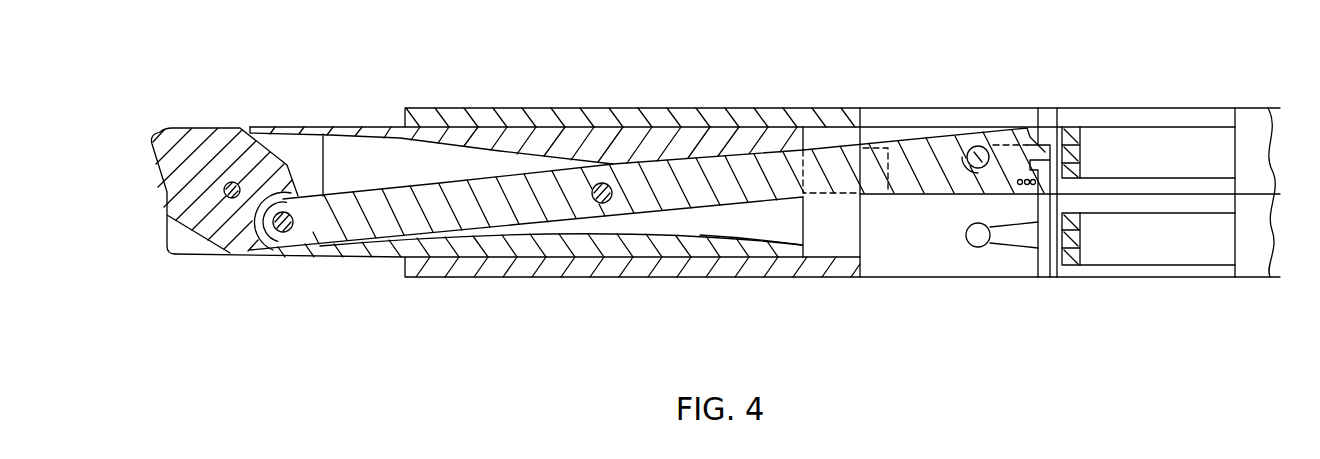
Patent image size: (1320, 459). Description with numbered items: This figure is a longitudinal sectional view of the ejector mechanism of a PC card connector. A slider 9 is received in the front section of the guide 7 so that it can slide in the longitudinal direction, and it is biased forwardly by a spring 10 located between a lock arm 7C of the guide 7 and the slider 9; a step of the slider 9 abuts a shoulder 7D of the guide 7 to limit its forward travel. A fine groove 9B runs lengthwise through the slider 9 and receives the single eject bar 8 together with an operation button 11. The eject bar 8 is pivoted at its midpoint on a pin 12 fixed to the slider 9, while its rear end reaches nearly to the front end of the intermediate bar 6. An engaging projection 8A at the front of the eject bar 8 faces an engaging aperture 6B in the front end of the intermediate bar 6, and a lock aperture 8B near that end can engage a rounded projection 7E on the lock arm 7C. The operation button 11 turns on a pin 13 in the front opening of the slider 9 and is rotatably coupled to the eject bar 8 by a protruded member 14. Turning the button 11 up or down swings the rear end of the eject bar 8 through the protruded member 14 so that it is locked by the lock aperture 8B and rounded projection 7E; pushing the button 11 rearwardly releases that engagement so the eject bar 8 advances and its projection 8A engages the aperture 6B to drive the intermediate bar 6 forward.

The intermediate bar 6 is at (1137, 248).
The engaging aperture 6B is at (1075, 245).
The guide 7 is at (637, 118).
The lock arm 7C is at (1021, 240).
The shoulder 7D is at (970, 160).
The rounded projection 7E is at (981, 240).
The eject bar 8 is at (697, 190).
The engaging projection 8A is at (1042, 140).
The lock aperture 8B is at (980, 147).
The slider 9 is at (486, 247).
The fine groove 9B is at (747, 232).
The spring 10 is at (1013, 181).
The operation button 11 is at (183, 200).
The pin 12 is at (615, 204).
The pin 13 is at (231, 199).
The protruded member 14 is at (284, 233).